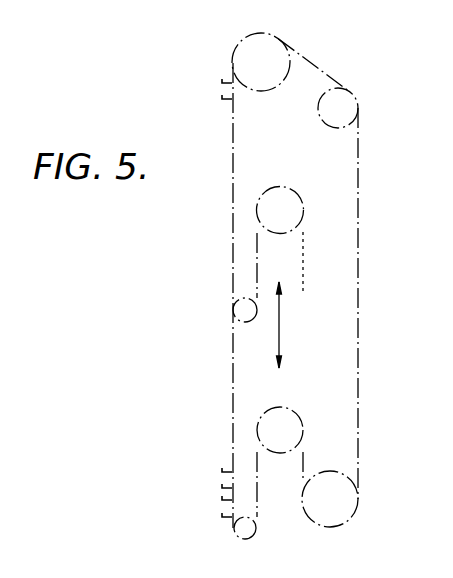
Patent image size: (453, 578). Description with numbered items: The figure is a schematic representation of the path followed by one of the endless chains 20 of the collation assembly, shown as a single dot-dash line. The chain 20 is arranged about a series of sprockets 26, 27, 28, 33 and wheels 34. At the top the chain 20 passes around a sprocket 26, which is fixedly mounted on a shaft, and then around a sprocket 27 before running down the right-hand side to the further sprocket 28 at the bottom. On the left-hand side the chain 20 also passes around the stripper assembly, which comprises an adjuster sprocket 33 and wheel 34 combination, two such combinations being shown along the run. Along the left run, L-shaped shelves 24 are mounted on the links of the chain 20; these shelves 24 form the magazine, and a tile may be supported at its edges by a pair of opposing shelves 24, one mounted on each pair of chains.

The endless chain 20 is at (332, 63).
The L-shaped shelf 24 is at (231, 66).
The sprocket 26 is at (270, 55).
The sprocket 27 is at (347, 104).
The sprocket 28 is at (338, 482).
The adjuster sprocket 33 is at (262, 205).
The wheel 34 is at (236, 310).